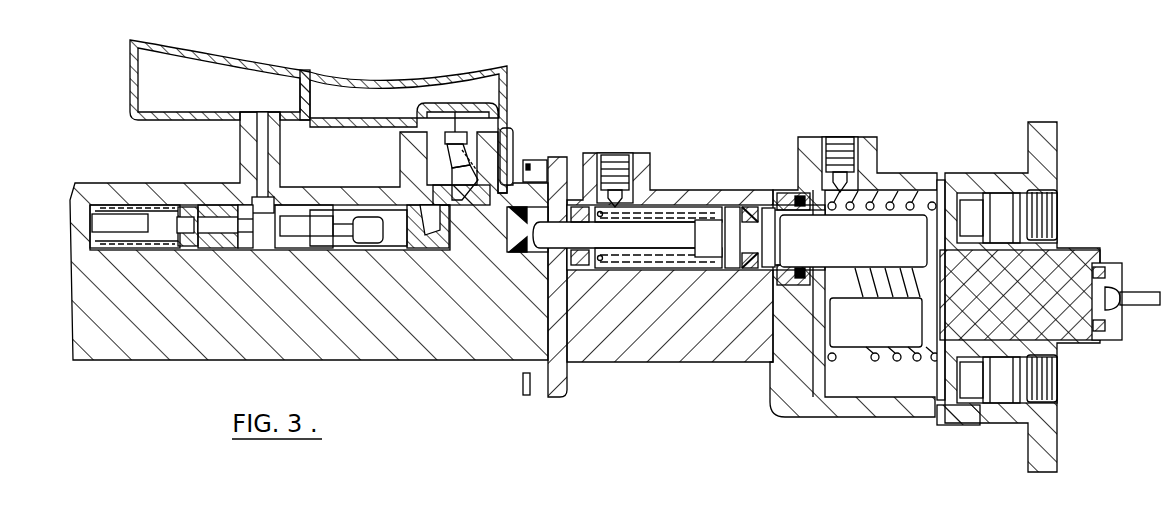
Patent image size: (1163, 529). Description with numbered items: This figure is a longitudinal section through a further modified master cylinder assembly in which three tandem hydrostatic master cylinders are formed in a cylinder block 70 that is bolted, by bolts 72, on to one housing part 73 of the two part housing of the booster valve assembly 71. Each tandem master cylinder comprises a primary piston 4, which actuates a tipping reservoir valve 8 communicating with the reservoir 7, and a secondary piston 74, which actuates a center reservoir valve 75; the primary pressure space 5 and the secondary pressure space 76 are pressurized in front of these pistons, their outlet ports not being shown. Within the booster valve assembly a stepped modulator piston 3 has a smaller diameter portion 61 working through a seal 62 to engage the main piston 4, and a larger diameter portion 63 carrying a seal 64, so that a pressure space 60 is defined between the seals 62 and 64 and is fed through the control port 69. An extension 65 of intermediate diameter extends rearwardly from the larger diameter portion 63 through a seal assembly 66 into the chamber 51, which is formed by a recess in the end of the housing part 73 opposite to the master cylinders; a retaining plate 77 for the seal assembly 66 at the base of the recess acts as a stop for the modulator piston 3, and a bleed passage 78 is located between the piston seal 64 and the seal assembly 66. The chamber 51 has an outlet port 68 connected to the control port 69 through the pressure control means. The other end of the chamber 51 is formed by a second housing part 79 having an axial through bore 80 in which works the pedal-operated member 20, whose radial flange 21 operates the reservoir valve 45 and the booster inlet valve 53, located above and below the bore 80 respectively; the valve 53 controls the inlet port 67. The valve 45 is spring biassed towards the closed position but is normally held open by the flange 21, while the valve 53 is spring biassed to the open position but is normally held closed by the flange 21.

The modulator piston 3 is at (712, 223).
The main piston 4 is at (517, 217).
The pressure space 5 is at (392, 223).
The reservoir 7 is at (485, 87).
The tipping valve 8 is at (478, 157).
The pedal-operated member 20 is at (1077, 280).
The radial flange 21 is at (950, 217).
The reservoir valve 45 is at (1002, 383).
The chamber 51 is at (878, 197).
The booster inlet valve 53 is at (1000, 207).
The pressure space 60 is at (676, 210).
The smaller diameter portion 61 is at (642, 233).
The seal 62 is at (580, 213).
The larger diameter portion 63 is at (733, 220).
The seal 64 is at (750, 212).
The extension 65 is at (835, 250).
The seal assembly 66 is at (803, 197).
The inlet port 67 is at (1053, 199).
The outlet port 68 is at (834, 137).
The control port 69 is at (613, 155).
The cylinder block 70 is at (388, 362).
The booster valve assembly 71 is at (884, 422).
The bolts 72 is at (525, 395).
The housing part 73 is at (640, 363).
The secondary piston 74 is at (243, 212).
The center reservoir valve 75 is at (207, 217).
The secondary pressure space 76 is at (163, 217).
The retaining plate 77 is at (820, 380).
The bleed passage 78 is at (770, 207).
The second housing part 79 is at (973, 427).
The through bore 80 is at (1073, 343).